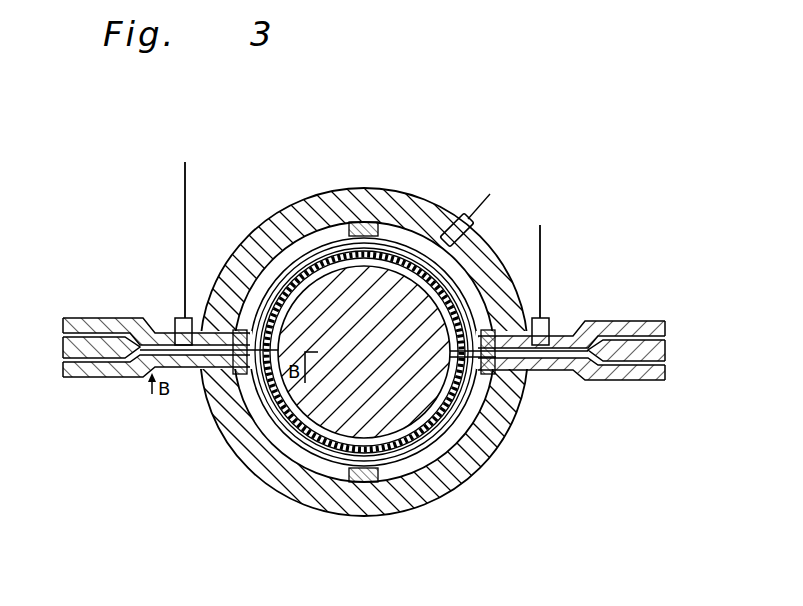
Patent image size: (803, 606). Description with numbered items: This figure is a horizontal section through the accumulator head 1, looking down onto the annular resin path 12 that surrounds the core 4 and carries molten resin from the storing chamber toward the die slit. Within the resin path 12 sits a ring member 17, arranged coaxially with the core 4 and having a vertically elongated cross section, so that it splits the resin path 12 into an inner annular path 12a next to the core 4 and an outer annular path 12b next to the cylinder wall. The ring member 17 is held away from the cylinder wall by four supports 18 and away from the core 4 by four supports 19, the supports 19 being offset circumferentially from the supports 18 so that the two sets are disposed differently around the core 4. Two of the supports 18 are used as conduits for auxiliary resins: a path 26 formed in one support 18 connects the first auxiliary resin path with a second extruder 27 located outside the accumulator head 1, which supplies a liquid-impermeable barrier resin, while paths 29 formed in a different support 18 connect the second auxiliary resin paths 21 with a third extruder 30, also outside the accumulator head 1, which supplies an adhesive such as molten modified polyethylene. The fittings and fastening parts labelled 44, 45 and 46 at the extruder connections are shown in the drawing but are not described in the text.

The accumulator head 1 is at (321, 186).
The core 4 is at (375, 364).
The resin path 12 is at (433, 460).
The inner annular path 12a is at (357, 440).
The outer annular path 12b is at (318, 470).
The ring member 17 is at (278, 428).
The supports 18 is at (362, 222).
The supports 19 is at (308, 290).
The second auxiliary resin paths 21 is at (472, 303).
The path 26 is at (240, 305).
The second extruder 27 is at (100, 312).
The paths 29 is at (493, 372).
The third extruder 30 is at (640, 316).
The sensor plug 44 is at (455, 215).
The inlet nut 45 is at (172, 312).
The outlet nut 46 is at (552, 312).